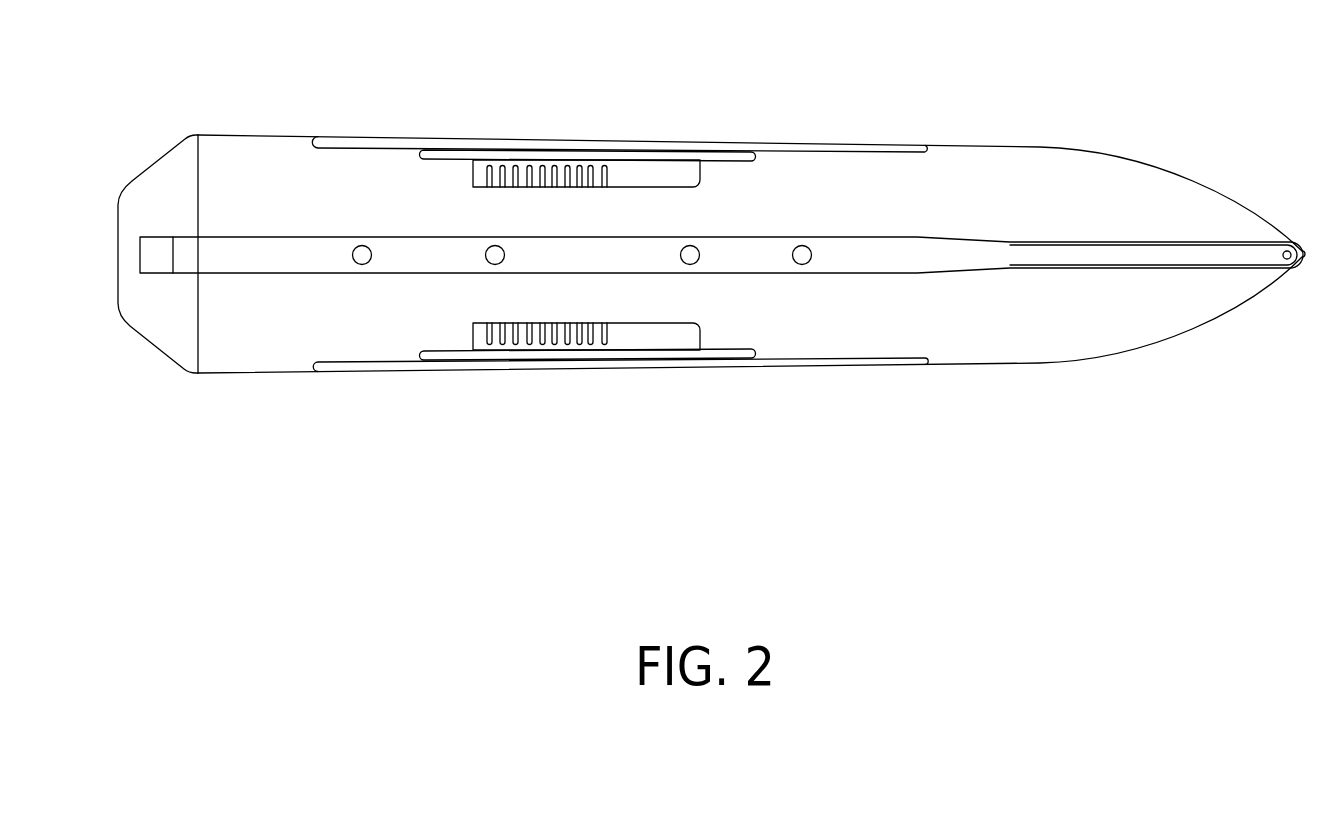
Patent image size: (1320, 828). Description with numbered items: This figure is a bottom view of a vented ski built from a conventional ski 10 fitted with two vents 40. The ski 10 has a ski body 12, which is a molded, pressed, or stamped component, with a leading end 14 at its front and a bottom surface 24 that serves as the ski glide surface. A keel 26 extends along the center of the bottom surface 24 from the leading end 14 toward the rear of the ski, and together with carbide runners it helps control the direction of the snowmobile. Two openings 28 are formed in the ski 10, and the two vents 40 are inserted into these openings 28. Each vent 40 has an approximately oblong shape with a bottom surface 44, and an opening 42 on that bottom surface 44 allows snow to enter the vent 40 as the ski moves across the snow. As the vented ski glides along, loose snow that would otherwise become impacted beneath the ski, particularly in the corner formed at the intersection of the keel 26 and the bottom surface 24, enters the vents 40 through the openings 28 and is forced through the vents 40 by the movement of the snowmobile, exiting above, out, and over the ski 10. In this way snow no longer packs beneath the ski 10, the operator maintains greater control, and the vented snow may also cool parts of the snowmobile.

The ski 10 is at (1068, 185).
The ski body 12 is at (515, 350).
The leading end 14 is at (147, 182).
The bottom surface 24 is at (267, 293).
The keel 26 is at (856, 258).
The openings 28 is at (491, 167).
The vents 40 is at (578, 168).
The opening 42 is at (555, 255).
The bottom surface 44 is at (592, 255).